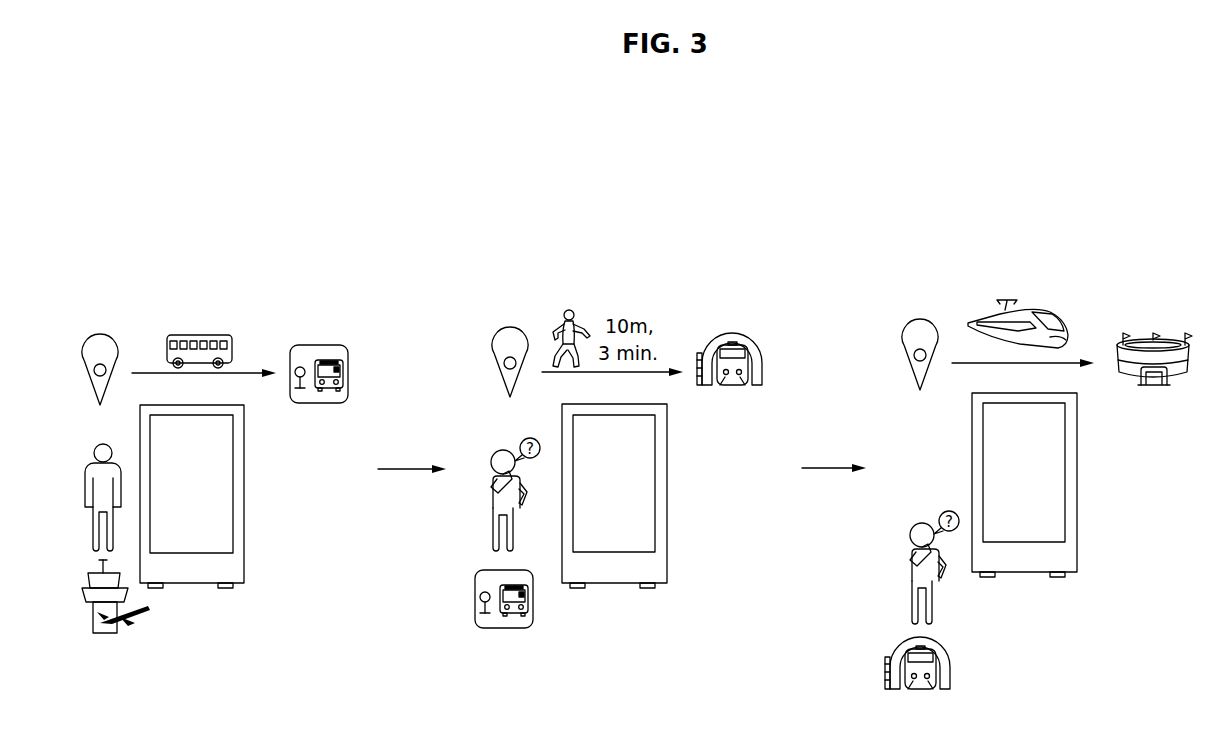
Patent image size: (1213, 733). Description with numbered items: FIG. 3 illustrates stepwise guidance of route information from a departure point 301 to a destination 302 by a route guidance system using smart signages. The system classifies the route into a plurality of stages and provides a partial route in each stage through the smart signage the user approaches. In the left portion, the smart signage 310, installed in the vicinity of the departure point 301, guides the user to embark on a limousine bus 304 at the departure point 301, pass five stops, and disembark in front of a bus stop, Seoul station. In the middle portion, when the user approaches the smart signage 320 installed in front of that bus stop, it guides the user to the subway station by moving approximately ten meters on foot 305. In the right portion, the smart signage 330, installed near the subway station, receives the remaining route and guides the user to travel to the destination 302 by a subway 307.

The departure point 301 is at (82, 597).
The destination 302 is at (1153, 333).
The limousine bus 304 is at (198, 333).
The on foot 305 is at (568, 310).
The subway 307 is at (1028, 308).
The smart signage 310 is at (244, 495).
The smart signage 320 is at (667, 493).
The smart signage 330 is at (1077, 482).